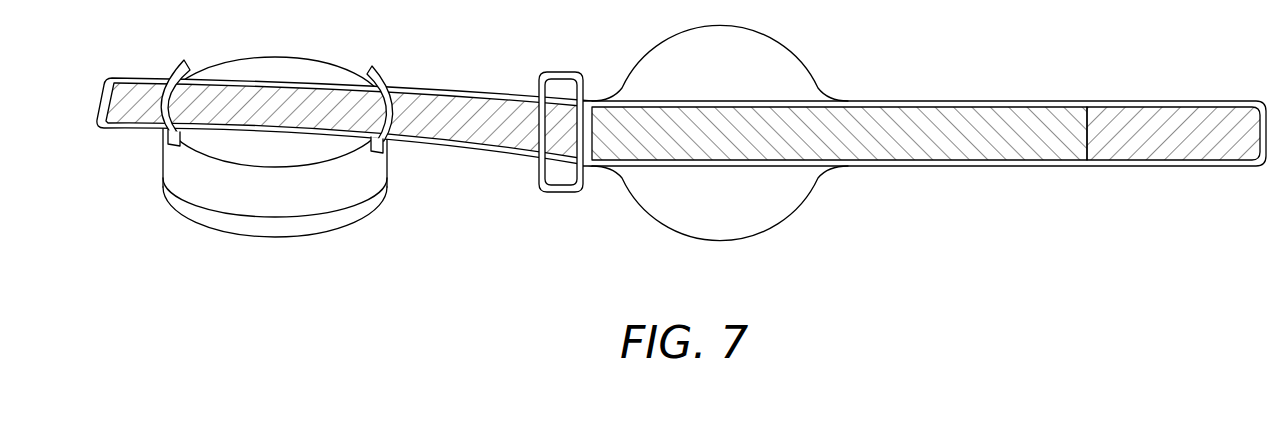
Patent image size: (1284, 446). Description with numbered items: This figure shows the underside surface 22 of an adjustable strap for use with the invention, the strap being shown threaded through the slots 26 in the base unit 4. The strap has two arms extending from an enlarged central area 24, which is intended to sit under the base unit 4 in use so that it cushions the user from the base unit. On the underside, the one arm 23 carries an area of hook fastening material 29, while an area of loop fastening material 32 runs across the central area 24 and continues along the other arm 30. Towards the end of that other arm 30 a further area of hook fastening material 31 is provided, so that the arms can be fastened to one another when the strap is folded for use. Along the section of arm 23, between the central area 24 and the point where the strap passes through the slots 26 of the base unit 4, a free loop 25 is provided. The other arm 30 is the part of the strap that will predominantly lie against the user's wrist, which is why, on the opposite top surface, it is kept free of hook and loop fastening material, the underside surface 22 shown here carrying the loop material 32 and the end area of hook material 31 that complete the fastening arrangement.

The base unit 4 is at (279, 232).
The underside surface 22 is at (828, 236).
The arm 23 is at (344, 92).
The central area 24 is at (719, 241).
The free loop 25 is at (560, 72).
The slots 26 is at (181, 62).
The hook fastening material 29 is at (273, 85).
The other arm 30 is at (924, 139).
The hook fastening material 31 is at (1173, 112).
The loop fastening material 32 is at (973, 112).